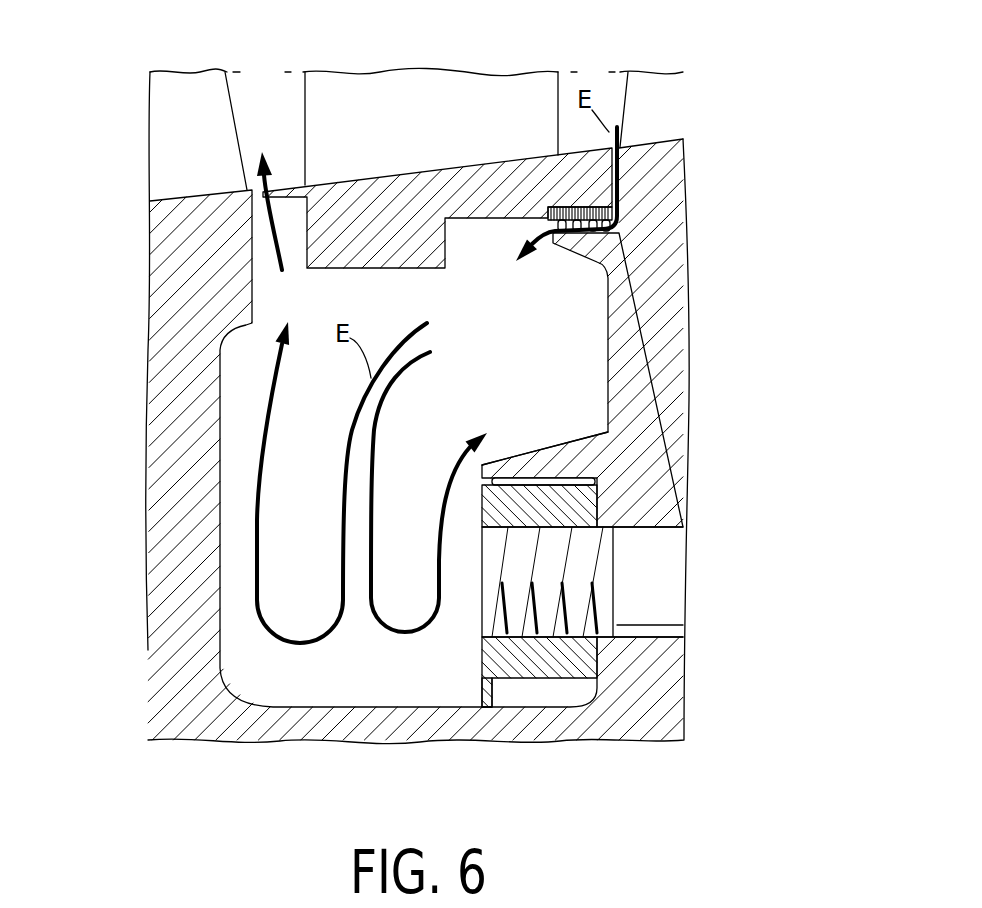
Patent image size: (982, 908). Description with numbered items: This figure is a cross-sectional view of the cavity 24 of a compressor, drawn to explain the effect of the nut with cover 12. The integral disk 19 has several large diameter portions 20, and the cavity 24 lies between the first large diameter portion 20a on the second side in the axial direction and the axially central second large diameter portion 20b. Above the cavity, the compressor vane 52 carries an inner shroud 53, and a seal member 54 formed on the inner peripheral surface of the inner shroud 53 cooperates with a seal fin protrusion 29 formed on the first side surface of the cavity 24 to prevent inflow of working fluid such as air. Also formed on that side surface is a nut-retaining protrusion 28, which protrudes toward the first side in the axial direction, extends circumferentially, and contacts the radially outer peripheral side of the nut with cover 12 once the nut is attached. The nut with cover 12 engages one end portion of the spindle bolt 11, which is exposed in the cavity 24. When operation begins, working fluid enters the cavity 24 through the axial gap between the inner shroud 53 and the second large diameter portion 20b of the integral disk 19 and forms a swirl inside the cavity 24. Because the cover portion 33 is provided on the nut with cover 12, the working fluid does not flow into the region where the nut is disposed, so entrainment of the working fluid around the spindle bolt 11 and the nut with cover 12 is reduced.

The spindle bolt 11 is at (643, 607).
The nut with cover 12 is at (545, 657).
The integral disk 19 is at (372, 408).
The large diameter portion 20 is at (660, 157).
The first large diameter portion 20a is at (646, 298).
The second large diameter portion 20b is at (181, 227).
The cavity 24 is at (362, 433).
The nut-retaining protrusion 28 is at (552, 455).
The seal fin protrusion 29 is at (590, 251).
The cover portion 33 is at (480, 653).
The compressor vane 52 is at (502, 105).
The inner shroud 53 is at (477, 202).
The seal member 54 is at (545, 229).